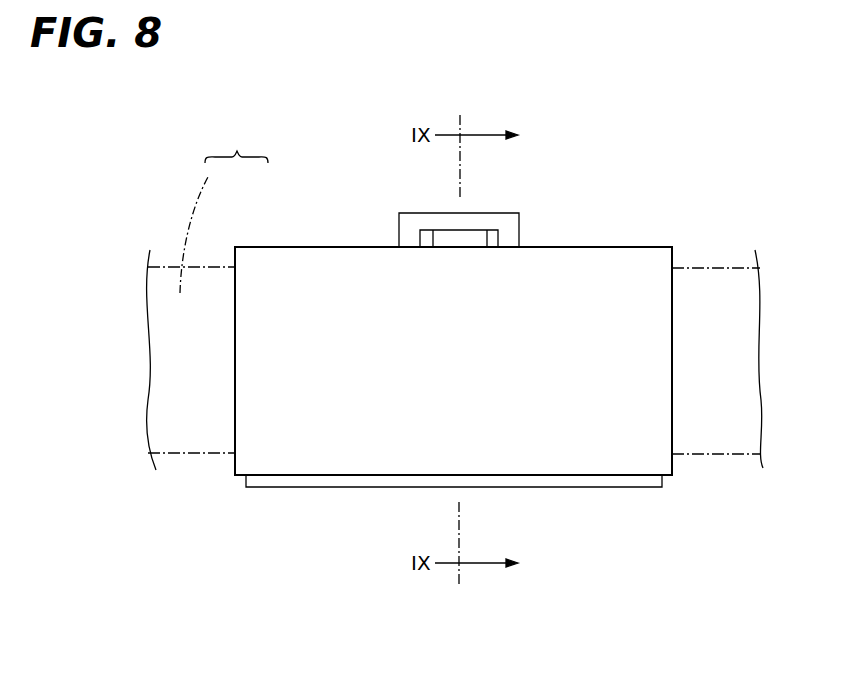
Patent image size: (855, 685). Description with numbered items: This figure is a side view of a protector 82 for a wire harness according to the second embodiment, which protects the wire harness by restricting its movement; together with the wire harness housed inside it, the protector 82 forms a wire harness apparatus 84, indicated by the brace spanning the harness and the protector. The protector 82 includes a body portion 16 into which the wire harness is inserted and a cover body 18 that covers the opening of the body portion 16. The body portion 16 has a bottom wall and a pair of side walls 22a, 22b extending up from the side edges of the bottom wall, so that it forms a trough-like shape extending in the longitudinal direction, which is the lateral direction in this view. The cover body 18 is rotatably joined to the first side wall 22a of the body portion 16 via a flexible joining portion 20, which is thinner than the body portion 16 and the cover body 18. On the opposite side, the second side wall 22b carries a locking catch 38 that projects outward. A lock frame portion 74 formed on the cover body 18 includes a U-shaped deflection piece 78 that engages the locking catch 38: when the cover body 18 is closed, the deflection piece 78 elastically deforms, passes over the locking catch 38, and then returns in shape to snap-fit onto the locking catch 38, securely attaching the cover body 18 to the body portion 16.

The body portion 16 is at (445, 218).
The cover body 18 is at (367, 224).
The joining portion 20 is at (517, 478).
The first side wall 22a is at (588, 495).
The second side wall 22b is at (598, 232).
The locking catch 38 is at (458, 242).
The lock frame portion 74 is at (507, 200).
The deflection piece 78 is at (510, 225).
The protector for a wire harness 82 is at (298, 214).
The wire harness apparatus 84 is at (236, 144).